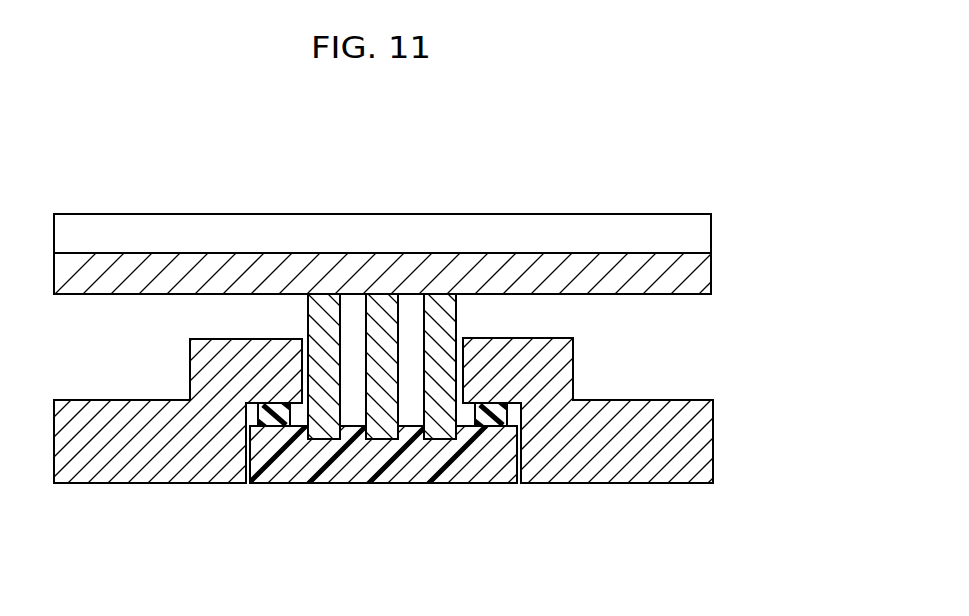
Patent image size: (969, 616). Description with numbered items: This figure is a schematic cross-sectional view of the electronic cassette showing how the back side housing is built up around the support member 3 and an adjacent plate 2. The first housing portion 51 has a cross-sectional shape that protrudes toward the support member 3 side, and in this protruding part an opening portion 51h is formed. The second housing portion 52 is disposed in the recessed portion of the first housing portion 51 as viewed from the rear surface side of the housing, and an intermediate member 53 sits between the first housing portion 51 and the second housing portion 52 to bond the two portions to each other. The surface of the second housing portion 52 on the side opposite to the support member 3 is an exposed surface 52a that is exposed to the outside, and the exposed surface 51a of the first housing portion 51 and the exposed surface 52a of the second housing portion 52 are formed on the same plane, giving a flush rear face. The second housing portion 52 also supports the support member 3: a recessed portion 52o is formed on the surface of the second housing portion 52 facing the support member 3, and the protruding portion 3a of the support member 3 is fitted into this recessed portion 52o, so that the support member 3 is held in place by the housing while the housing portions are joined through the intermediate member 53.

The substrate 2 is at (705, 234).
The support member 3 is at (705, 283).
The protruding portion 3a is at (322, 303).
The first housing portion 51 is at (98, 480).
The exposed surface 51a is at (172, 484).
The opening portion 51h is at (302, 374).
The second housing portion 52 is at (307, 484).
The exposed surface 52a is at (273, 486).
The recessed portion 52o is at (341, 438).
The intermediate member 53 is at (277, 407).